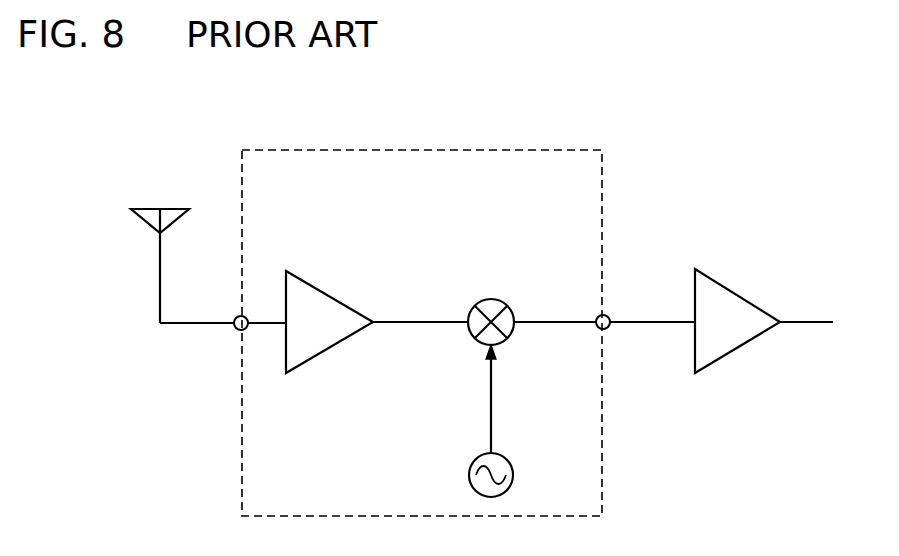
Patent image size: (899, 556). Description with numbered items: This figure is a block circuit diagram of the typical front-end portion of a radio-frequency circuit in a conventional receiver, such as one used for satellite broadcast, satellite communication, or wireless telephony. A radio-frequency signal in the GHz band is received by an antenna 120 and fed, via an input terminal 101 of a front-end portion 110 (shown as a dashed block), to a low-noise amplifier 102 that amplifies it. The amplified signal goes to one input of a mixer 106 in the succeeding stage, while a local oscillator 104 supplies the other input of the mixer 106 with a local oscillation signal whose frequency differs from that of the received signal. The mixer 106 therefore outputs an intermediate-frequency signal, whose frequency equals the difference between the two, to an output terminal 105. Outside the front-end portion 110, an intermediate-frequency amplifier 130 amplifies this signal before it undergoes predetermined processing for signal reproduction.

The input terminal 101 is at (248, 316).
The low-noise amplifier 102 is at (327, 350).
The local oscillator 104 is at (507, 455).
The output terminal 105 is at (598, 318).
The mixer 106 is at (484, 301).
The front-end portion 110 is at (603, 441).
The antenna 120 is at (142, 218).
The intermediate-frequency amplifier 130 is at (748, 345).